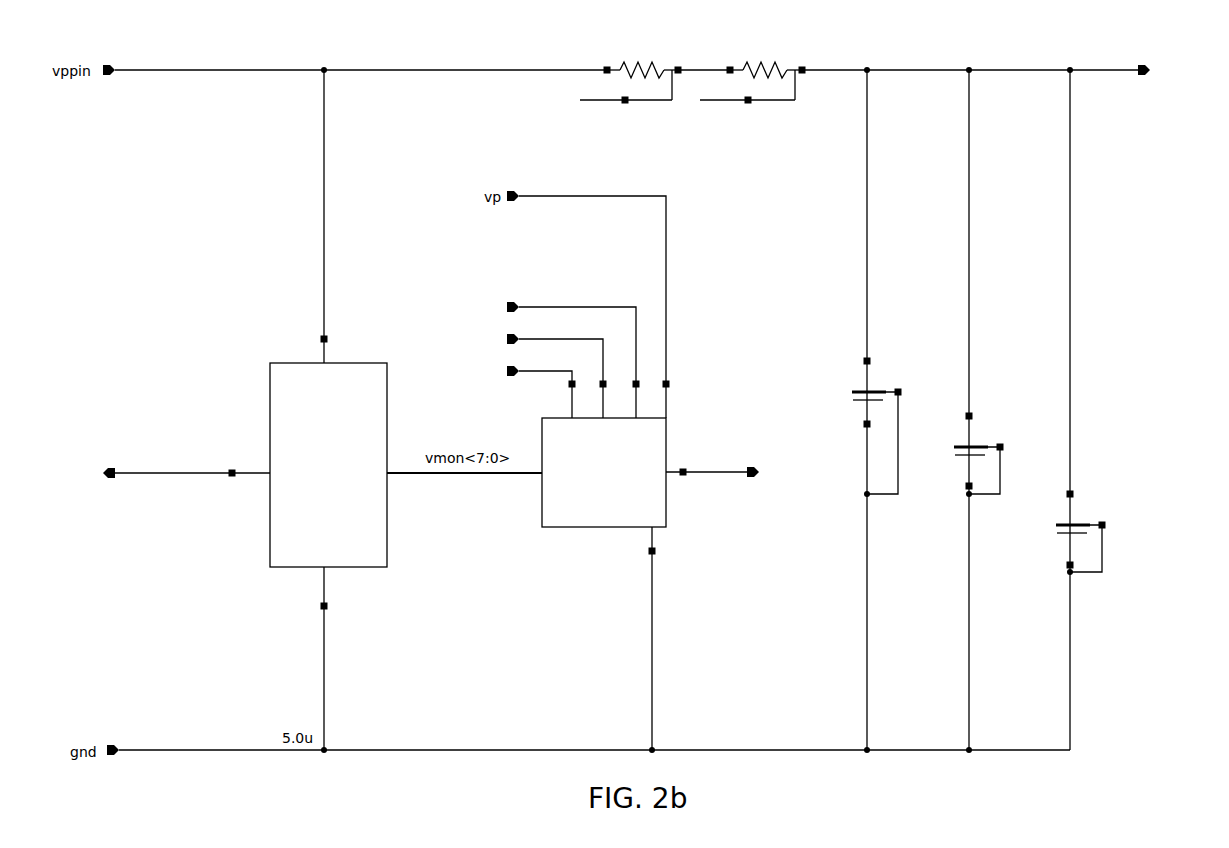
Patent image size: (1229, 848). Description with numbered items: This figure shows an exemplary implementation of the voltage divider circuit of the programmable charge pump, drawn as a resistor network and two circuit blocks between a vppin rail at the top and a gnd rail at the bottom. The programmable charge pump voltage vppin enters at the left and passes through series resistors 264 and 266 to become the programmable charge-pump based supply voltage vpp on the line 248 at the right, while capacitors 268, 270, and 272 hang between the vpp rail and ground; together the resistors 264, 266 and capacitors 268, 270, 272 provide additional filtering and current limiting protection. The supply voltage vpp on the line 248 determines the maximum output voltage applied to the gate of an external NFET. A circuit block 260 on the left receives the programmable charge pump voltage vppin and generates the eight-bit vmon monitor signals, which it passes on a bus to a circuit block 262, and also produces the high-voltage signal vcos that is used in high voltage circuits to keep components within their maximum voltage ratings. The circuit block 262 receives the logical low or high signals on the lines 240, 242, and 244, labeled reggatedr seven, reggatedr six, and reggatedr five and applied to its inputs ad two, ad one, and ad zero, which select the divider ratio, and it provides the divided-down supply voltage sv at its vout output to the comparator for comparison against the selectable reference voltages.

The line 240 is at (525, 378).
The line 242 is at (534, 337).
The line 244 is at (592, 306).
The line 248 is at (1106, 73).
The circuit block 260 is at (285, 363).
The circuit block 262 is at (666, 422).
The resistor 264 is at (614, 108).
The resistor 266 is at (736, 108).
The capacitor 268 is at (852, 390).
The capacitor 270 is at (1000, 410).
The capacitor 272 is at (1108, 560).